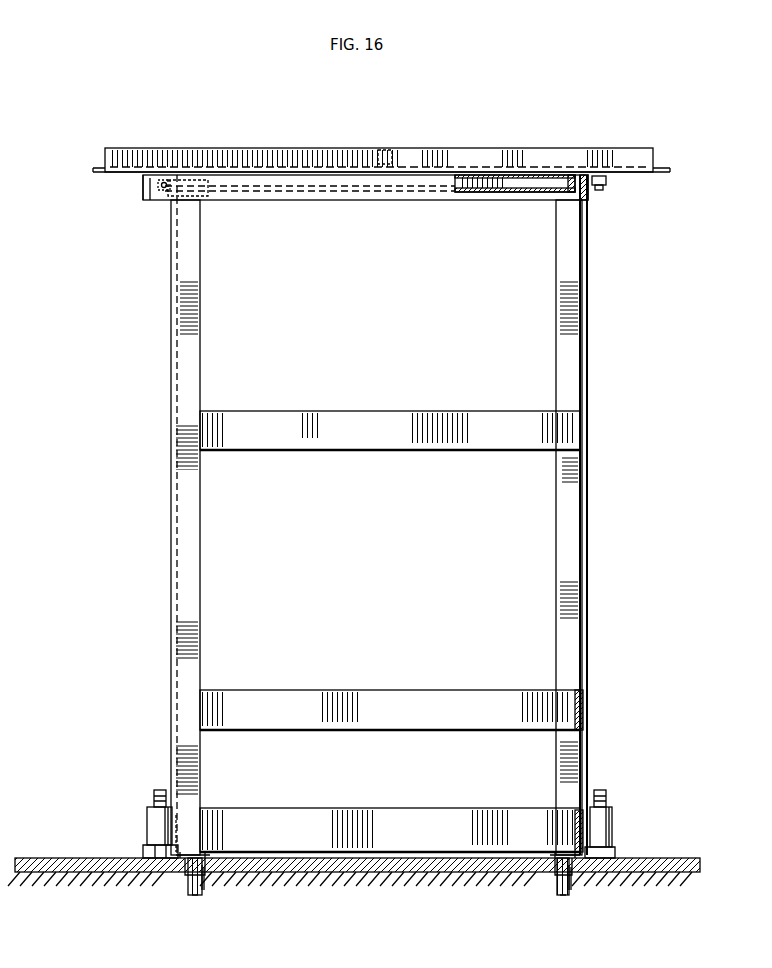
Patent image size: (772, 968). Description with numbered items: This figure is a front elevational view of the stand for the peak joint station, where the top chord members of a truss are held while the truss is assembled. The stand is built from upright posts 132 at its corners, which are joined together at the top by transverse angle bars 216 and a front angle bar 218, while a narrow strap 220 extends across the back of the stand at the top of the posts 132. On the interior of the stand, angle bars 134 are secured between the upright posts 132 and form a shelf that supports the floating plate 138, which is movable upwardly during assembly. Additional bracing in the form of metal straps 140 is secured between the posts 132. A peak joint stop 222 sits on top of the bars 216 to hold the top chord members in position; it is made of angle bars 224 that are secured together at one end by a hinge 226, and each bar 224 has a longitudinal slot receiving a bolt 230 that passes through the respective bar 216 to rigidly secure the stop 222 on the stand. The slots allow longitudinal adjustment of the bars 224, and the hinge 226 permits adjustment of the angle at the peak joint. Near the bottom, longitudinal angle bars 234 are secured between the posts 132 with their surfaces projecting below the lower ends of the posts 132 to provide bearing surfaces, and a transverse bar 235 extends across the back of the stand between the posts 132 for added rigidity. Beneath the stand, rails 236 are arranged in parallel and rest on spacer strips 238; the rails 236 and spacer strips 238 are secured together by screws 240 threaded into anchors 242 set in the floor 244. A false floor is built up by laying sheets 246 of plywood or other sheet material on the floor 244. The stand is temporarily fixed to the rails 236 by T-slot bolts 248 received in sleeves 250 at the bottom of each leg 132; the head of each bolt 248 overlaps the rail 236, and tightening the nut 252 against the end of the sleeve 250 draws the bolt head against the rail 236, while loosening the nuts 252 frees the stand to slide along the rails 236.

The upright posts 132 is at (185, 352).
The angle bars 134 is at (580, 178).
The floating plate 138 is at (503, 186).
The metal straps 140 is at (294, 422).
The transverse angle bars 216 is at (162, 202).
The front angle bar 218 is at (302, 190).
The narrow strap 220 is at (525, 190).
The peak joint stop 222 is at (266, 139).
The angle bars 224 is at (290, 160).
The hinge 226 is at (385, 150).
The bolt 230 is at (156, 185).
The longitudinal angle bars 234 is at (185, 828).
The transverse bar 235 is at (430, 825).
The rails 236 is at (200, 850).
The spacer strips 238 is at (188, 864).
The screws 240 is at (206, 878).
The anchors 242 is at (195, 882).
The floor 244 is at (440, 876).
The sheets 246 is at (80, 872).
The T-slot bolts 248 is at (160, 858).
The sleeves 250 is at (146, 824).
The nut 252 is at (150, 800).